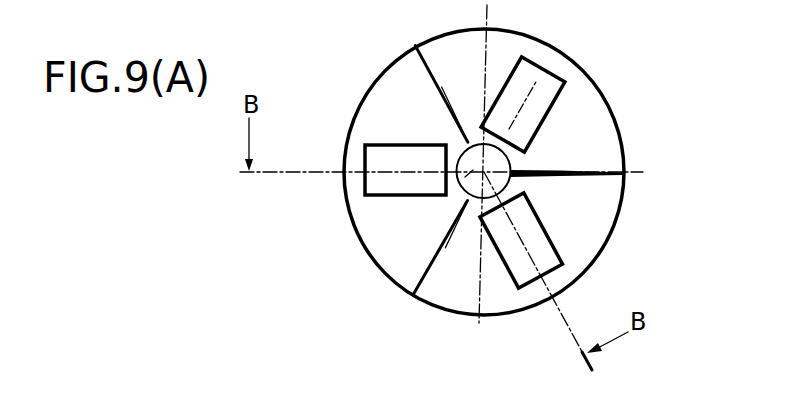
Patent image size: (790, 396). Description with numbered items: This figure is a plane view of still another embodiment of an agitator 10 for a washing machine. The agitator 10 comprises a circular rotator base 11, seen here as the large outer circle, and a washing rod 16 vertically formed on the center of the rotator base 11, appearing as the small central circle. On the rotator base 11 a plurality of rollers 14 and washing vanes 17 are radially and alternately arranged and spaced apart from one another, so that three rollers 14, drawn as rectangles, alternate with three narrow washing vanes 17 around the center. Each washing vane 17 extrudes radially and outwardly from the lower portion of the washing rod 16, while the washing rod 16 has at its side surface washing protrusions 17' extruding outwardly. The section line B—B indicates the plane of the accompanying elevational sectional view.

The agitator 10 is at (615, 102).
The rotator base 11 is at (391, 86).
The rollers 14 is at (527, 273).
The washing rod 16 is at (461, 192).
The washing vanes 17 is at (470, 170).
The washing protrusions 17' is at (440, 278).